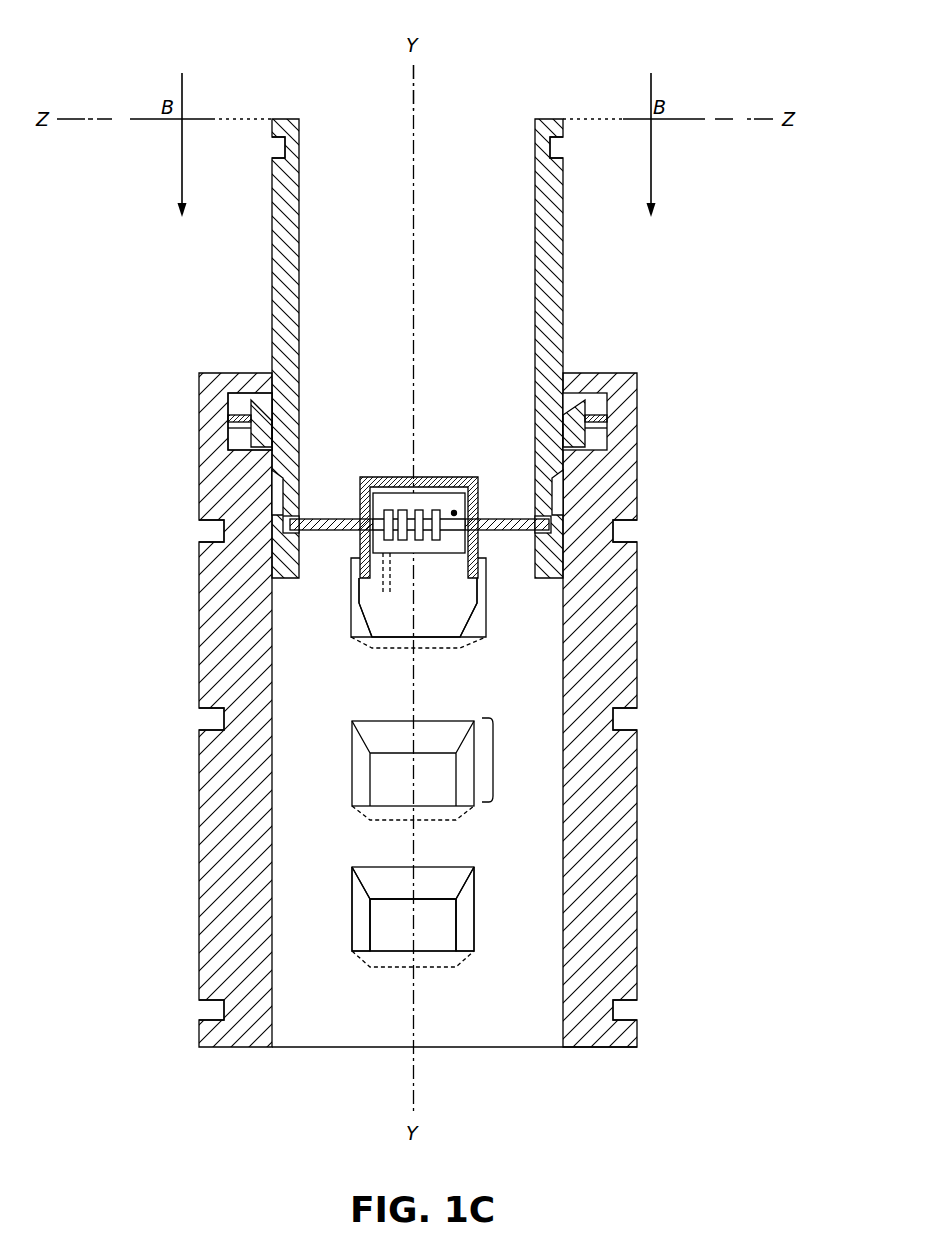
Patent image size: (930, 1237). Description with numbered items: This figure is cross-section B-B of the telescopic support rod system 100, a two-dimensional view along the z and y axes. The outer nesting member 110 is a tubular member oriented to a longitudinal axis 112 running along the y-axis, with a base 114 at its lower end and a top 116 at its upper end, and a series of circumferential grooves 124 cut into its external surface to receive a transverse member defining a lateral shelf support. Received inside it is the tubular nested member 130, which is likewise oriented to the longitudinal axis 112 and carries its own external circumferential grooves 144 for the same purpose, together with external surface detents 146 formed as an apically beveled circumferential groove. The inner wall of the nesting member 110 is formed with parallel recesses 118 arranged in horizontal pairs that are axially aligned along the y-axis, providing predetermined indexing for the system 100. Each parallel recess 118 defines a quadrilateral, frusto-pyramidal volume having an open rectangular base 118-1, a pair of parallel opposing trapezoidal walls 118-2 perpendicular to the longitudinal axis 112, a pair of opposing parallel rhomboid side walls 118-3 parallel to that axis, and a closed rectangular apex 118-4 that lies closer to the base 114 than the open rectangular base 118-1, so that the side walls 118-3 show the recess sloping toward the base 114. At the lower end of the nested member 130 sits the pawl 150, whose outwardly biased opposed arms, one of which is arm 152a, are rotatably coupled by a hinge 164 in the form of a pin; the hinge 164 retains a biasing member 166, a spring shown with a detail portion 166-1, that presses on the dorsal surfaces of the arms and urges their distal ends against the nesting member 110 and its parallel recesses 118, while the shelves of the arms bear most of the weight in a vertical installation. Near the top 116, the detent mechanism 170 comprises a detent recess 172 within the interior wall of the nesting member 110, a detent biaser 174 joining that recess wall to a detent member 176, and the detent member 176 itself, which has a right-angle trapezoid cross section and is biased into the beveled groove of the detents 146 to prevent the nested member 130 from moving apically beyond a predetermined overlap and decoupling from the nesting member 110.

The telescopic support rod system 100 is at (112, 62).
The nesting member 110 is at (640, 890).
The longitudinal axis 112 is at (420, 88).
The base 114 is at (600, 1066).
The top 116 is at (613, 360).
The parallel recesses 118 is at (363, 697).
The open rectangular base 118-1 is at (528, 752).
The trapezoidal walls 118-2 is at (445, 885).
The rhomboid side walls 118-3 is at (362, 925).
The closed rectangular apex 118-4 is at (428, 940).
The circumferential grooves 124 is at (213, 531).
The nested member 130 is at (565, 273).
The circumferential grooves 144 is at (283, 148).
The external surface detents 146 is at (275, 505).
The pawl 150 is at (510, 623).
The arm 152a is at (437, 625).
The hinge 164 is at (350, 517).
The biasing member 166 is at (438, 508).
The sensor plates 166-1 is at (383, 508).
The detent mechanism 170 is at (598, 410).
The detent recess 172 is at (235, 406).
The detent biaser 174 is at (233, 420).
The detent member 176 is at (268, 427).